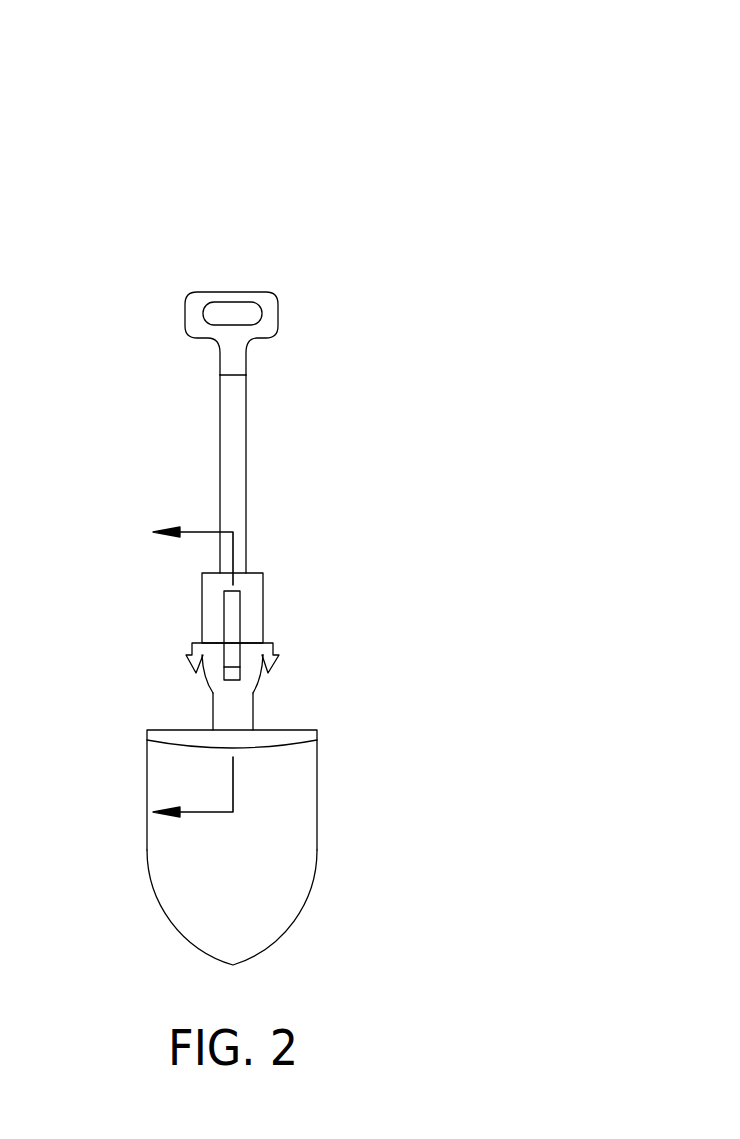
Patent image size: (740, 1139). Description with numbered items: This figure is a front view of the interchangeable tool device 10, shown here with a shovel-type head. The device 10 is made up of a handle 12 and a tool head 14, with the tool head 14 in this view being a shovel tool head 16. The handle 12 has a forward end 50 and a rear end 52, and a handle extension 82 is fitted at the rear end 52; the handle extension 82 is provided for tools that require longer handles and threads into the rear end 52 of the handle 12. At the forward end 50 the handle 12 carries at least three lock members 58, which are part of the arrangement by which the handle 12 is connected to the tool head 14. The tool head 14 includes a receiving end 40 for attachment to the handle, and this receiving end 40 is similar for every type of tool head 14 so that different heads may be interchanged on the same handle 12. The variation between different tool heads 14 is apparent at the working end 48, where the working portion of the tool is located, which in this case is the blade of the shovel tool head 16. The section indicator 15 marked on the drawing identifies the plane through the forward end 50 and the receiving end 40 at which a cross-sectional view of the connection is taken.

The interchangeable tool device 10 is at (319, 108).
The handle 12 is at (246, 550).
The handle extension 82 is at (233, 361).
The rear end 52 is at (235, 450).
The section line 15 is at (193, 673).
The forward end 50 is at (210, 603).
The lock members 58 is at (192, 651).
The receiving end 40 is at (208, 683).
The tool head 14 is at (253, 708).
The shovel tool head 16 is at (296, 860).
The working end 48 is at (186, 908).